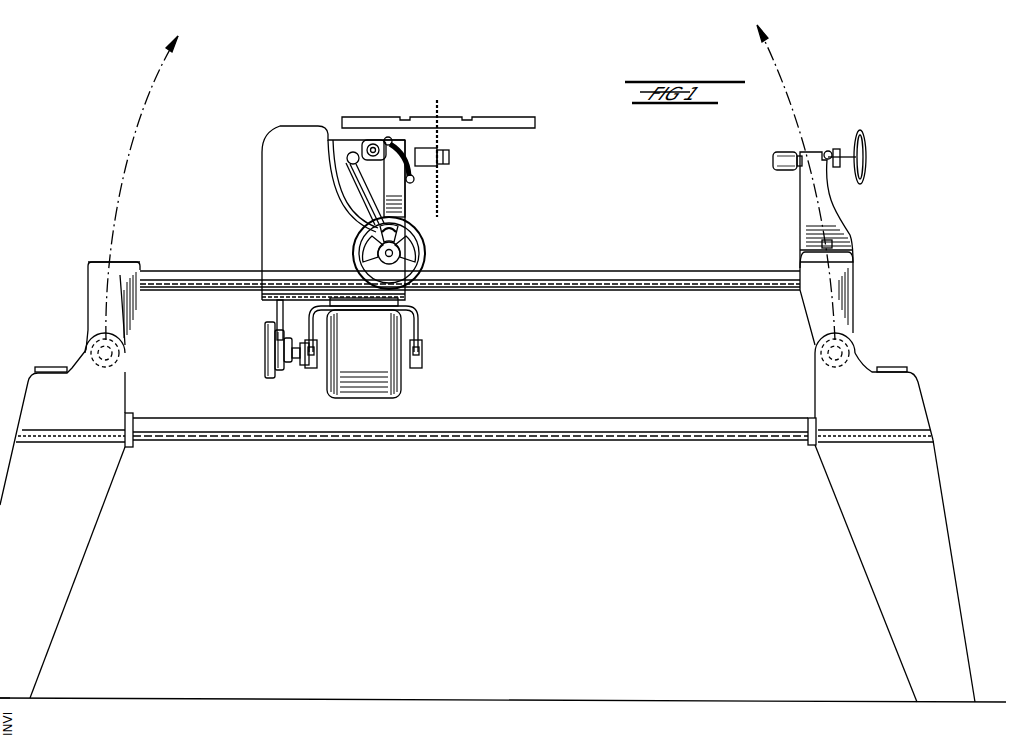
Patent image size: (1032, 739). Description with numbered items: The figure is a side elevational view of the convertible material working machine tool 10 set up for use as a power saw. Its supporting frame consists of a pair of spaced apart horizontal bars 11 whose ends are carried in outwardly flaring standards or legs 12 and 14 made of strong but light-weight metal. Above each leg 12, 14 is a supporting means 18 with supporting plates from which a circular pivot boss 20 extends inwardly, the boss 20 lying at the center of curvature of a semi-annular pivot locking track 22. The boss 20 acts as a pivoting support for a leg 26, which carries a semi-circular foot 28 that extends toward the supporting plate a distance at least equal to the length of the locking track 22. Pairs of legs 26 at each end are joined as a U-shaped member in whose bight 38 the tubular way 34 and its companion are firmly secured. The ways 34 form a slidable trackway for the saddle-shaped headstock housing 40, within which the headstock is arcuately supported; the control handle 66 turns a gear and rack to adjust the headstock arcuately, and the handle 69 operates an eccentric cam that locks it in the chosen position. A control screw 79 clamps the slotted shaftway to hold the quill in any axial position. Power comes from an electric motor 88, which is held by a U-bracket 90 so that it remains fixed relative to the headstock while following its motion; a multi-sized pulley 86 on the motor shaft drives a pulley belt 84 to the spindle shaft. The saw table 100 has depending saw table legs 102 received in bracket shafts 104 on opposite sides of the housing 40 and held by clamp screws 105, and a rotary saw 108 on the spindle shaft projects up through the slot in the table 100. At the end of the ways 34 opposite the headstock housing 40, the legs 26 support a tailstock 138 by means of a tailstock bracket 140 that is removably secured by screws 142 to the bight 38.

The convertible material working machine tool 10 is at (66, 306).
The horizontal bars 11 is at (590, 432).
The standard or leg 12 is at (92, 528).
The standard or leg 14 is at (852, 517).
The supporting means 18 is at (42, 366).
The circular pivot boss 20 is at (128, 366).
The semi-annular pivot locking track 22 is at (103, 370).
The leg 26 is at (88, 273).
The semi-circular foot 28 is at (118, 345).
The tubular way 34 is at (515, 290).
The bight 38 is at (136, 258).
The headstock housing 40 is at (264, 225).
The control handle 66 is at (421, 241).
The handle 69 is at (362, 183).
The control screw 79 is at (396, 140).
The pulley belt 84 is at (278, 311).
The multi-sized pulley 86 is at (268, 360).
The electric motor 88 is at (322, 392).
The U-bracket 90 is at (419, 330).
The saw table 100 is at (492, 117).
The saw table legs 102 is at (386, 138).
The bracket shafts 104 is at (388, 181).
The clamp screws 105 is at (330, 148).
The rotary saw 108 is at (441, 190).
The tailstock 138 is at (782, 152).
The tailstock bracket 140 is at (834, 220).
The screws 142 is at (840, 242).